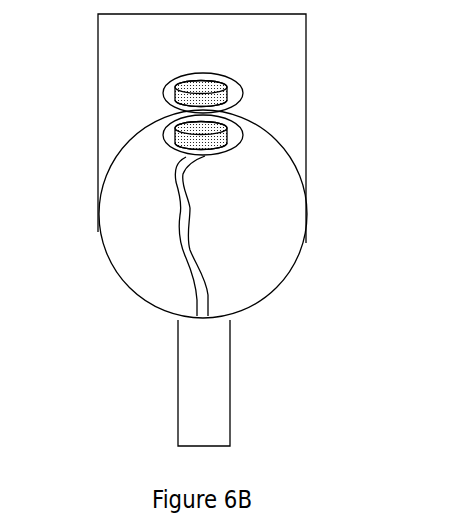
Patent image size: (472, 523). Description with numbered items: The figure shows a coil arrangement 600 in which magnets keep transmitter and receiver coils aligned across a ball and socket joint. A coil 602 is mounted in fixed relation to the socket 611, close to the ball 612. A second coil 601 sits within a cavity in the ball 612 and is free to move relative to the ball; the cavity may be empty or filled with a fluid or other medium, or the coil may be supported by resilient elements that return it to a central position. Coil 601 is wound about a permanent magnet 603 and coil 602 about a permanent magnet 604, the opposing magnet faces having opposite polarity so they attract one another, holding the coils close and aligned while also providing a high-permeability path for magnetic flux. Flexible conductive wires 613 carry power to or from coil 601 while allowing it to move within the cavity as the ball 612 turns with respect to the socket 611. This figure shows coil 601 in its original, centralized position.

The implantable system 600 is at (78, 58).
The coil 601 is at (243, 143).
The coil 602 is at (243, 99).
The permanent magnet 603 is at (216, 127).
The permanent magnet 604 is at (175, 108).
The socket 611 is at (307, 62).
The ball 612 is at (278, 290).
The flexible conductive wires 613 is at (177, 257).